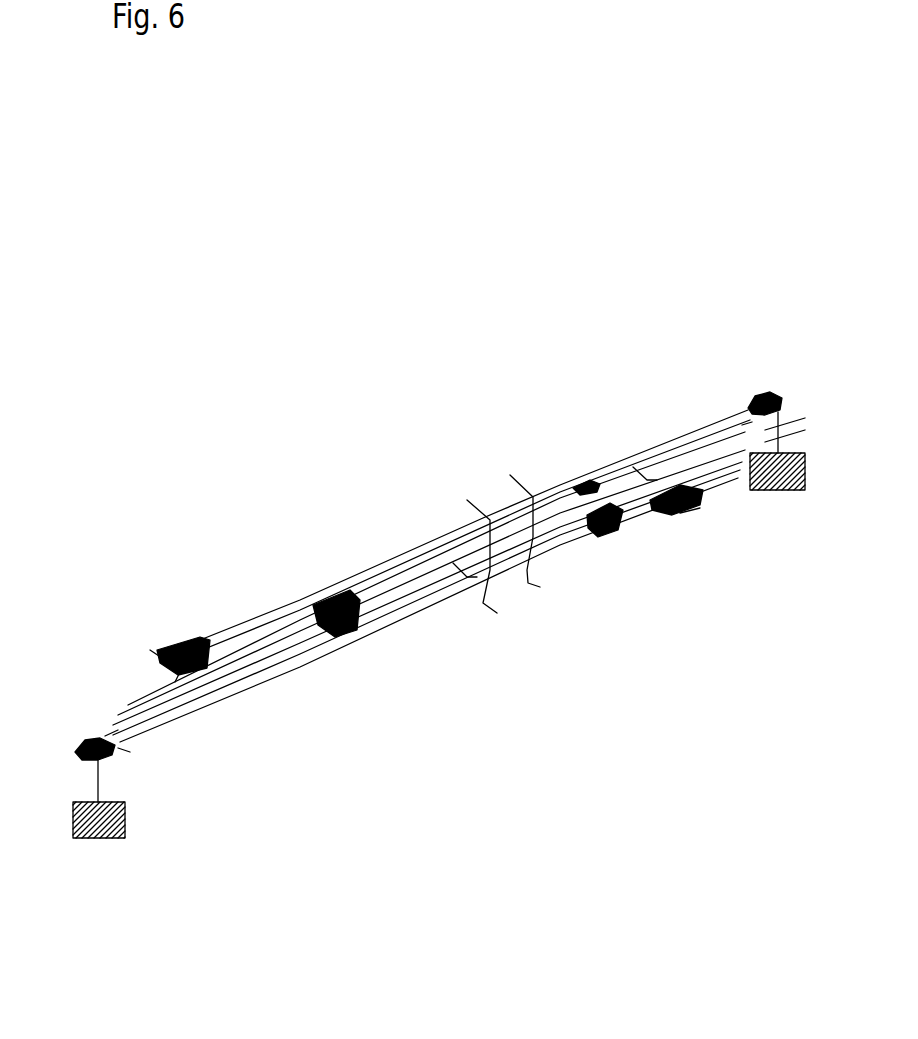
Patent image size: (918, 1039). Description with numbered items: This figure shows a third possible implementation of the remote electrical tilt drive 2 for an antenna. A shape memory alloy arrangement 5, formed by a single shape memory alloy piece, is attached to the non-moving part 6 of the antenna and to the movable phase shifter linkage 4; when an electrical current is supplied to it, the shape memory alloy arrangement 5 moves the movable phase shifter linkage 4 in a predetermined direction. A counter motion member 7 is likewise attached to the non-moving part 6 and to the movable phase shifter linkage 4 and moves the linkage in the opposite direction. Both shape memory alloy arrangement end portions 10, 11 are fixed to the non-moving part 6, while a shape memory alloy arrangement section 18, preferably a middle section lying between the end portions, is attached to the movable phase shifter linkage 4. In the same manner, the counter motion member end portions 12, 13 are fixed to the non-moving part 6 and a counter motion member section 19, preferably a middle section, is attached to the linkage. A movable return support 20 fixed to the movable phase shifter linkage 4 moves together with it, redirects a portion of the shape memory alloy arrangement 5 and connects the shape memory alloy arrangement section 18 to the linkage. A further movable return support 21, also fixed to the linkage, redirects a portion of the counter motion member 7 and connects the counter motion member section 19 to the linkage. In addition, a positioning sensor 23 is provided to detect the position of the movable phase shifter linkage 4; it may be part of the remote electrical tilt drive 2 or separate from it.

The remote electrical tilt drive 2 is at (416, 256).
The movable phase shifter linkage 4 is at (570, 518).
The shape memory alloy arrangement 5 is at (342, 647).
The non-moving part 6 is at (780, 404).
The counter motion member 7 is at (400, 550).
The shape memory alloy arrangement end portion 10 is at (127, 750).
The shape memory alloy arrangement end portion 11 is at (110, 732).
The counter motion member end portion 12 is at (745, 428).
The counter motion member end portion 13 is at (736, 410).
The shape memory alloy arrangement section 18 is at (657, 510).
The counter motion member section 19 is at (203, 638).
The movable return support 20 is at (690, 513).
The further movable return support 21 is at (157, 647).
The positioning sensor 23 is at (330, 617).